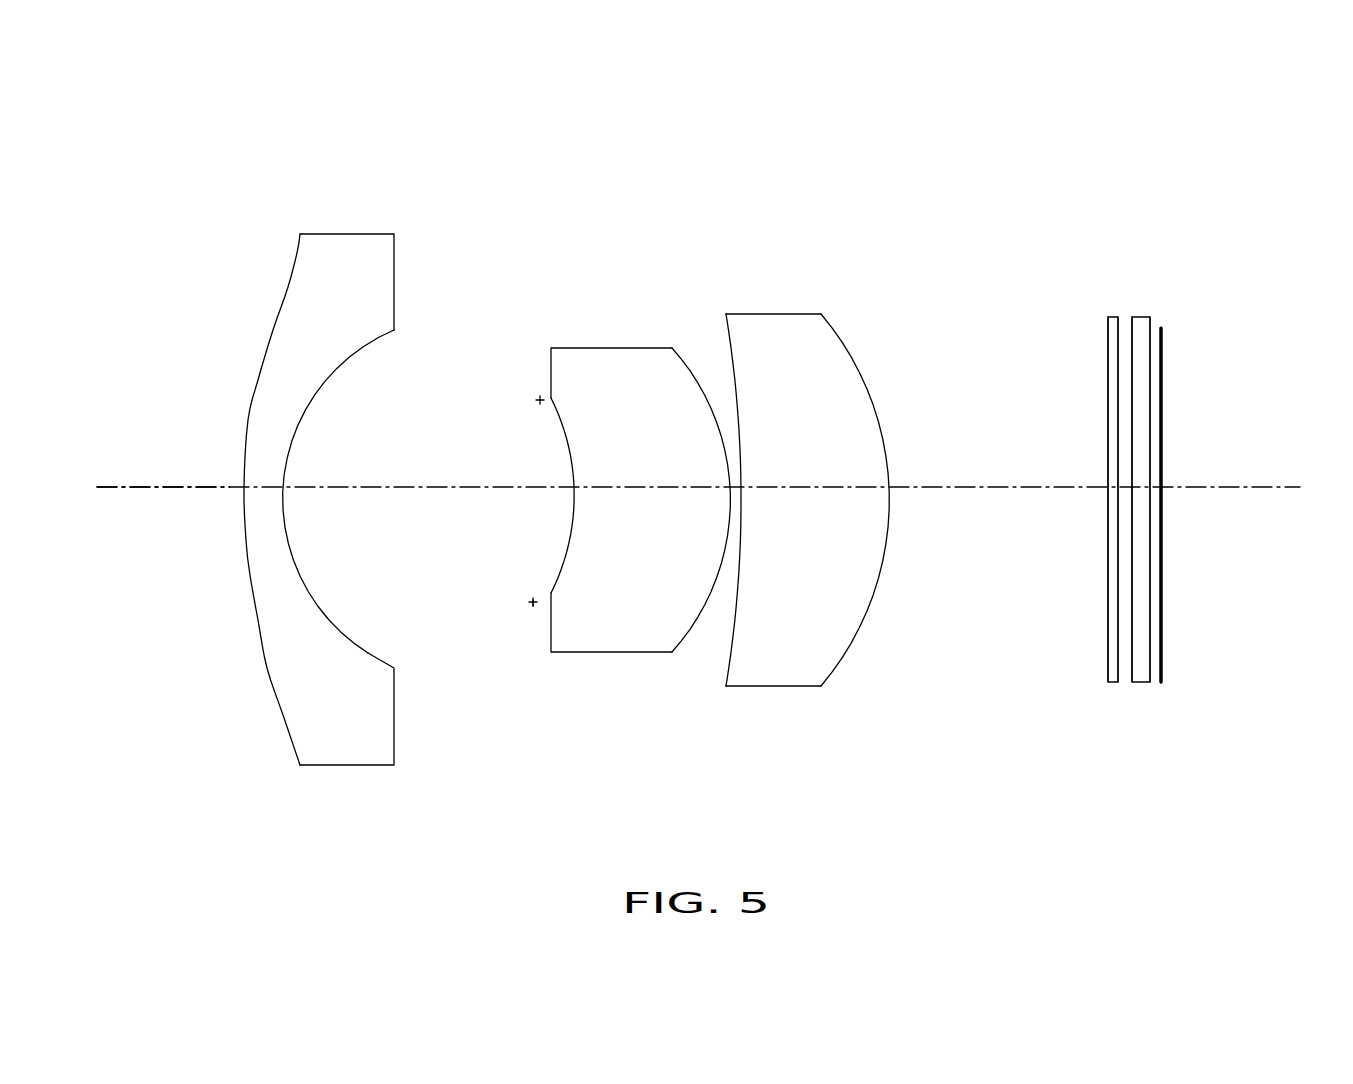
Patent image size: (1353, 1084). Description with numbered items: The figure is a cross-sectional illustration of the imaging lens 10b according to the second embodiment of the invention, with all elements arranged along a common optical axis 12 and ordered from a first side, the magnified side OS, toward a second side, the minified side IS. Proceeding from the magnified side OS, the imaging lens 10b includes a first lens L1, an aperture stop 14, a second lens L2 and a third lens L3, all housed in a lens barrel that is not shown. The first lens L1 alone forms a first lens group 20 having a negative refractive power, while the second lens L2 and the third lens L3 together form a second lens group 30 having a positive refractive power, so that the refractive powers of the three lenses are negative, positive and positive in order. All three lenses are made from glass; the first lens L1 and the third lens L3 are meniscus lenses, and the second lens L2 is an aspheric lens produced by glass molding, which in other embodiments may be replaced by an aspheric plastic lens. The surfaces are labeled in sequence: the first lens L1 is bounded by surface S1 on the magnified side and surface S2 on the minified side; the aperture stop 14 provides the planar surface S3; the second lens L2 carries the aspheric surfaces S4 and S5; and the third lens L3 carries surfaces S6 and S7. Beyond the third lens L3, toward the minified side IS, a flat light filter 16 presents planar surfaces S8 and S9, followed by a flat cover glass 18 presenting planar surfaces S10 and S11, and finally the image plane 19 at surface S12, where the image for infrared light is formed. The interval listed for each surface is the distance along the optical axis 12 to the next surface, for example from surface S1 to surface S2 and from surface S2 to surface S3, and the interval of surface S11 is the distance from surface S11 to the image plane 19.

The imaging lens 10b is at (178, 113).
The optical axis 12 is at (186, 486).
The aperture stop 14 is at (540, 400).
The light filter 16 is at (1116, 318).
The cover glass 18 is at (1137, 330).
The image plane 19 is at (1162, 398).
The first lens group 20 is at (480, 158).
The second lens group 30 is at (920, 158).
The first lens L1 is at (347, 248).
The second lens L2 is at (607, 355).
The third lens L3 is at (782, 328).
The magnified side OS is at (165, 204).
The minified side IS is at (1285, 204).
The surface S1 is at (264, 665).
The surface S2 is at (368, 653).
The surface S3 is at (533, 605).
The surface S4 is at (552, 592).
The surface S5 is at (706, 610).
The surface S6 is at (731, 650).
The surface S7 is at (880, 585).
The surface S8 is at (1108, 630).
The surface S9 is at (1122, 692).
The surface S10 is at (1131, 648).
The surface S11 is at (1152, 650).
The surface S12 is at (1162, 640).